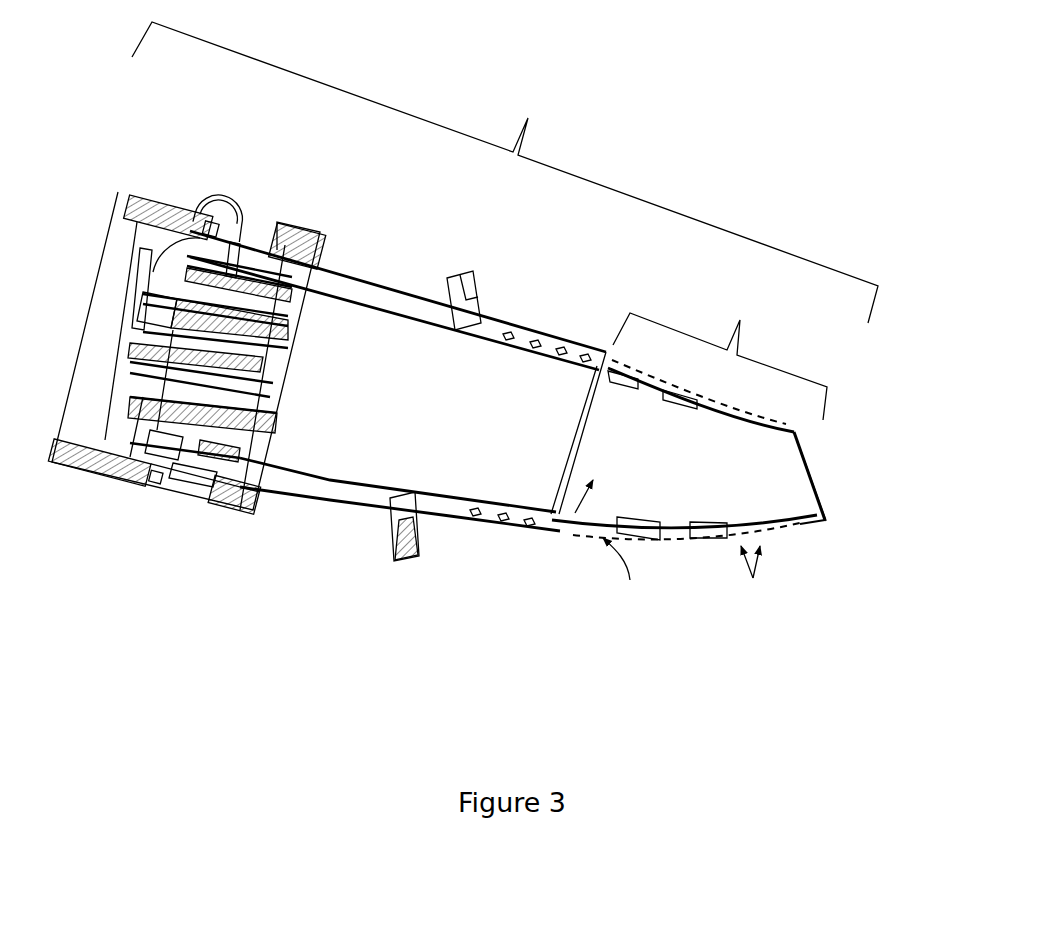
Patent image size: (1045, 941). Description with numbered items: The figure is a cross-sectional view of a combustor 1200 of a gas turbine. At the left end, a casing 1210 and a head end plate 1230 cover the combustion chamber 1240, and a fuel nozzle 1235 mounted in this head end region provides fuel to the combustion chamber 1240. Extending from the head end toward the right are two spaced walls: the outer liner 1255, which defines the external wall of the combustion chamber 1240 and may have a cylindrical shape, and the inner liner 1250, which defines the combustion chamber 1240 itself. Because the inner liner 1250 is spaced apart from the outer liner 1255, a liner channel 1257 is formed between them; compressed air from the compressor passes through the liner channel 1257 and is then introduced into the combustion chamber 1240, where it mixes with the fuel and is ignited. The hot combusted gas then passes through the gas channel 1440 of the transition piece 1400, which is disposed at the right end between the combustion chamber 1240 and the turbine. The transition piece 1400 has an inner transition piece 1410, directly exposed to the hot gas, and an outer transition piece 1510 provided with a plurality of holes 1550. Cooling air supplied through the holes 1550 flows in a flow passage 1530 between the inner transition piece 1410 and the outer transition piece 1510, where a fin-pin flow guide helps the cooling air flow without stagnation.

The combustor 1200 is at (505, 172).
The casing 1210 is at (160, 203).
The head end plate 1230 is at (112, 320).
The fuel nozzle 1235 is at (140, 413).
The combustion chamber 1240 is at (328, 450).
The inner liner 1250 is at (404, 300).
The outer liner 1255 is at (388, 285).
The liner channel 1257 is at (330, 276).
The transition piece 1400 is at (689, 420).
The inner transition piece 1410 is at (807, 523).
The gas channel 1440 is at (566, 530).
The outer transition piece 1510 is at (827, 520).
The flow passage 1530 is at (630, 571).
The holes 1550 is at (748, 575).